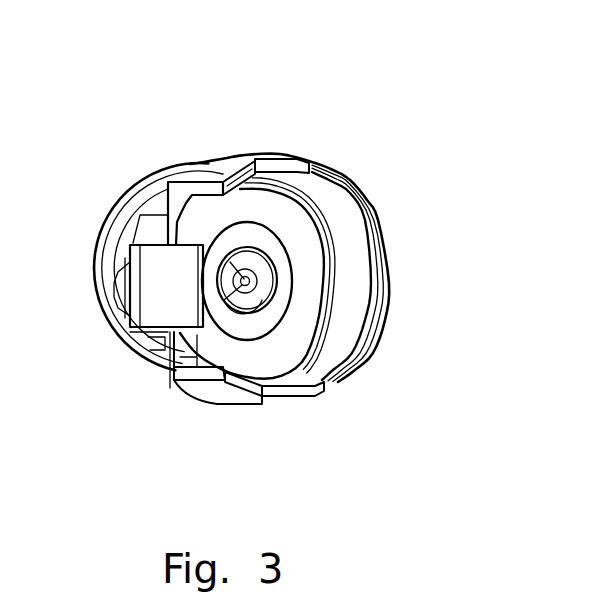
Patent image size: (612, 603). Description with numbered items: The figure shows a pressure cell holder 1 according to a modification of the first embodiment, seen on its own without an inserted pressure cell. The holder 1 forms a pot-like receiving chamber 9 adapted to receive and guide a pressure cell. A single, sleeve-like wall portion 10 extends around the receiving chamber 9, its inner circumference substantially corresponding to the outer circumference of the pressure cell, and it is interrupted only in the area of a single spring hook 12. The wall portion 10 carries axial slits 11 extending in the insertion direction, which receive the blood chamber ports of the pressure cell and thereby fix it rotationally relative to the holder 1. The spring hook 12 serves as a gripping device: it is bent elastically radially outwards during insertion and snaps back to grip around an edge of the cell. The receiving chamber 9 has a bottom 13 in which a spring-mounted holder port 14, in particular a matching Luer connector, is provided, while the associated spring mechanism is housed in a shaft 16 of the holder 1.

The pressure cell holder 1 is at (158, 96).
The receiving chamber 9 is at (302, 224).
The wall portion 10 is at (360, 327).
The axial slits 11 is at (277, 168).
The spring hook 12 is at (177, 297).
The bottom 13 is at (233, 352).
The holder port 14 is at (245, 280).
The shaft 16 is at (93, 290).